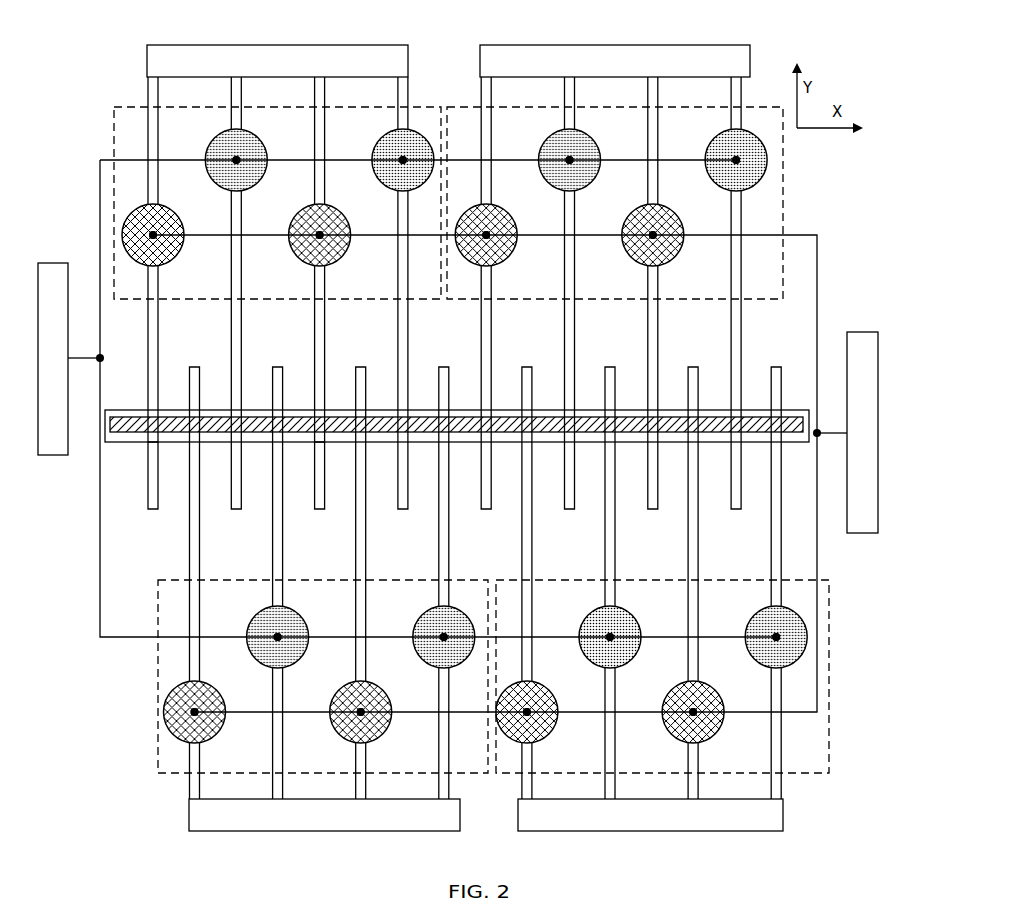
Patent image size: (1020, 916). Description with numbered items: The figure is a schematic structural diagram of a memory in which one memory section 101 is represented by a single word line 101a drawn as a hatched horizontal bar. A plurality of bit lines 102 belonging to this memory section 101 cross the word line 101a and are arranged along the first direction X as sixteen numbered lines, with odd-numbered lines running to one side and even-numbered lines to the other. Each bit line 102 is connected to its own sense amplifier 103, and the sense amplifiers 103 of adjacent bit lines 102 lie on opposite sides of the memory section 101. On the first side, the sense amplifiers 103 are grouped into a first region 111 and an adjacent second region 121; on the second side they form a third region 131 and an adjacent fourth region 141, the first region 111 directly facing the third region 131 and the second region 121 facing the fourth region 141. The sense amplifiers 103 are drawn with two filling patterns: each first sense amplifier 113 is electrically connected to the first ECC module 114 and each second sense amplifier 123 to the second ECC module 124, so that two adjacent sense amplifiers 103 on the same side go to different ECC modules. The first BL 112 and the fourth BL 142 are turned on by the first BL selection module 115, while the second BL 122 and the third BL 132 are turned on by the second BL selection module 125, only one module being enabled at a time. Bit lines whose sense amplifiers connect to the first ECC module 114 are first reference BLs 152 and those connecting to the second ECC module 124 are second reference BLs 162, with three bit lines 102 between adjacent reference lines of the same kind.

The memory section 101 is at (425, 439).
The word line 101a is at (147, 423).
The bit line (BL) 102 is at (768, 333).
The sense amplifier 103 is at (505, 197).
The first region 111 is at (124, 105).
The first BL 112 is at (155, 392).
The first sense amplifier 113 is at (750, 173).
The first ECC module 114 is at (62, 262).
The first BL selection module 115 is at (147, 62).
The second region 121 is at (458, 105).
The second BL 122 is at (487, 388).
The second sense amplifier 123 is at (660, 232).
The second ECC module 124 is at (867, 332).
The second BL selection module 125 is at (480, 62).
The third region 131 is at (169, 580).
The third BL 132 is at (280, 388).
The fourth region 141 is at (500, 580).
The fourth BL 142 is at (612, 388).
The first reference BL 152 is at (242, 390).
The second reference BL 162 is at (153, 490).